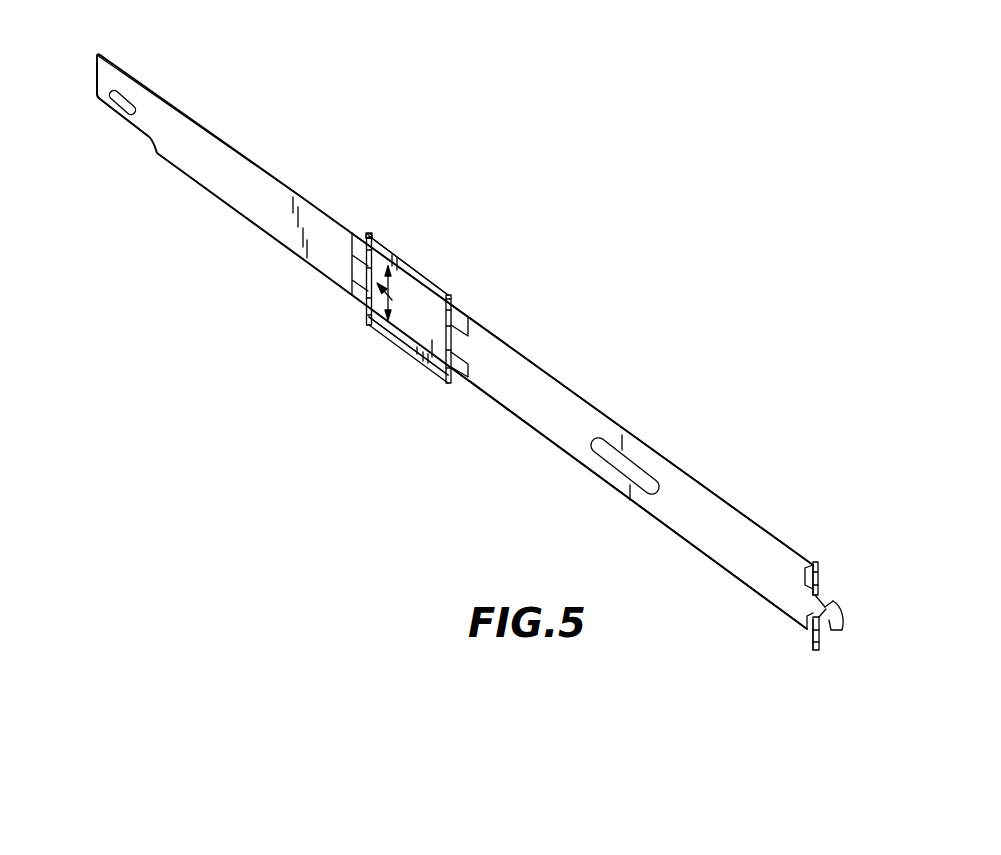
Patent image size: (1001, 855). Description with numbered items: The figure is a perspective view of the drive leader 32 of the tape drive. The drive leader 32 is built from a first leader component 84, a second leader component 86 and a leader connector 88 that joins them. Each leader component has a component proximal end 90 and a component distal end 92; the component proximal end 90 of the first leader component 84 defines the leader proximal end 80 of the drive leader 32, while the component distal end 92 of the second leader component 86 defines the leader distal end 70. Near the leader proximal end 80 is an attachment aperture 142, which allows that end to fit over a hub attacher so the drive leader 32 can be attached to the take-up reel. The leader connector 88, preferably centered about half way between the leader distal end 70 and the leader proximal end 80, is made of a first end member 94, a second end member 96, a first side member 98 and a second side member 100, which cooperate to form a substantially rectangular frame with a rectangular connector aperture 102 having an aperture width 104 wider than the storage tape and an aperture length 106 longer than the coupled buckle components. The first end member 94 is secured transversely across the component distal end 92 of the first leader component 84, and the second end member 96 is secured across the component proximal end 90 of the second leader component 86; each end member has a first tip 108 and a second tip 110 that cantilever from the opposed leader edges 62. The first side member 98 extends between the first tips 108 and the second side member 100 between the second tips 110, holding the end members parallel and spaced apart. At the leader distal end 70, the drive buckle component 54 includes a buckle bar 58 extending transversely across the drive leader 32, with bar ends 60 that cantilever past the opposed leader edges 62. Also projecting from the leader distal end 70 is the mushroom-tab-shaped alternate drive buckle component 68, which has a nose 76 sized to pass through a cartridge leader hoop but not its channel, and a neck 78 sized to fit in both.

The drive leader 32 is at (630, 253).
The drive buckle component 54 is at (818, 563).
The buckle bar 58 is at (825, 567).
The bar ends 60 is at (812, 563).
The opposed leader edges 62 is at (272, 174).
The alternate drive buckle component 68 is at (848, 647).
The leader distal end 70 is at (828, 584).
The nose 76 is at (843, 605).
The neck 78 is at (833, 640).
The leader proximal end 80 is at (95, 83).
The first leader component 84 is at (200, 122).
The second leader component 86 is at (563, 388).
The leader connector 88 is at (442, 277).
The component proximal end 90 is at (94, 55).
The component distal end 92 is at (352, 294).
The first end member 94 is at (373, 233).
The second end member 96 is at (452, 296).
The first side member 98 is at (428, 273).
The second side member 100 is at (410, 350).
The connector aperture 102 is at (433, 365).
The aperture width 104 is at (407, 270).
The aperture length 106 is at (390, 337).
The first tip 108 is at (368, 233).
The second tip 110 is at (368, 330).
The attachment aperture 142 is at (125, 102).